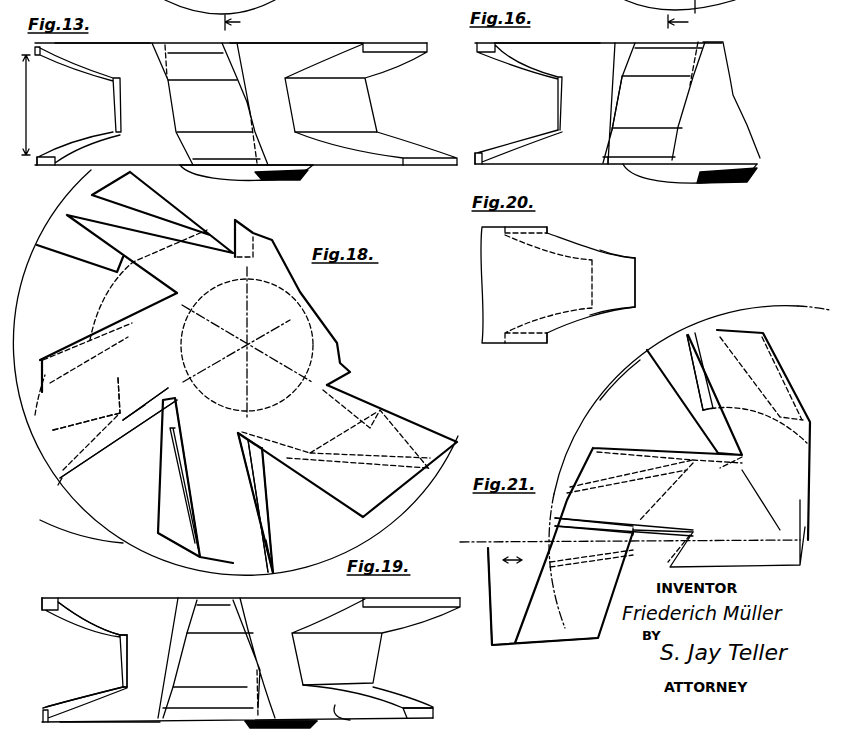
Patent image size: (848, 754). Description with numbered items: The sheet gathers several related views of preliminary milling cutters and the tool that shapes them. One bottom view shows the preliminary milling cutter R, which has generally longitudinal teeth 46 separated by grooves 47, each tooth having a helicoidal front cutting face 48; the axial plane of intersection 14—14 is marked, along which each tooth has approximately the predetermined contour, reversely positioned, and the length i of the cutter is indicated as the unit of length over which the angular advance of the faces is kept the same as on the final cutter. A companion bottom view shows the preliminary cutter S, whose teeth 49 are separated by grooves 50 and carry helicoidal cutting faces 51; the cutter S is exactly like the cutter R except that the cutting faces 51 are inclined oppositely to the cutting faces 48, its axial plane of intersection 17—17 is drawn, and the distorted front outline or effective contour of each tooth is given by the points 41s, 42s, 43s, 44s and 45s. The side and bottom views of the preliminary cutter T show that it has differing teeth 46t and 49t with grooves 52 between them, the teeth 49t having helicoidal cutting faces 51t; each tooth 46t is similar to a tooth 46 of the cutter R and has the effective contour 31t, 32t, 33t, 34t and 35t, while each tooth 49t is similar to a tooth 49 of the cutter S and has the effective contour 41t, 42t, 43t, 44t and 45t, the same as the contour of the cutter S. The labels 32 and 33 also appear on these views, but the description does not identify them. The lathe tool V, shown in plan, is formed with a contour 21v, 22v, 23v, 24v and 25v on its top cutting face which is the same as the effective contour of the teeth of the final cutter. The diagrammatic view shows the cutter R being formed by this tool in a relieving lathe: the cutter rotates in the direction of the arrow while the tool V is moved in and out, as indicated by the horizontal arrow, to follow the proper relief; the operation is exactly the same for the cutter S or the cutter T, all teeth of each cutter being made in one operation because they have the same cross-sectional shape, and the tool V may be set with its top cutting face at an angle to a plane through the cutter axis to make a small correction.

In FIG. 13, the axial plane of intersection 14 is at (246, 22).
In FIG. 16, the axial plane of intersection 17 is at (688, 22).
In FIG. 13, the length of the cutter i is at (26, 105).
In FIG. 13, the preliminary milling cutter R is at (308, 43).
In FIG. 21, the preliminary milling cutter R is at (689, 467).
In FIG. 16, the preliminary milling cutter S is at (723, 40).
In FIG. 18, the preliminary milling cutter T is at (235, 372).
In FIG. 20, the lathe tool V is at (558, 285).
In FIG. 21, the lathe tool V is at (543, 596).
In FIG. 13, the contour point 31t is at (270, 157).
In FIG. 18, the contour point 31t is at (273, 567).
In FIG. 19, the contour point 31t is at (272, 717).
In FIG. 13, the contour point 32t is at (255, 130).
In FIG. 18, the contour point 32t is at (263, 497).
In FIG. 19, the contour point 32t is at (253, 688).
In FIG. 13, the contour point 33t is at (248, 107).
In FIG. 18, the contour point 33t is at (258, 482).
In FIG. 19, the contour point 33t is at (247, 658).
In FIG. 13, the contour point 34t is at (240, 78).
In FIG. 18, the contour point 34t is at (236, 479).
In FIG. 19, the contour point 34t is at (240, 628).
In FIG. 21, the contour point 34t is at (660, 528).
In FIG. 13, the contour point 35t is at (240, 45).
In FIG. 18, the contour point 35t is at (200, 540).
In FIG. 19, the contour point 35t is at (240, 597).
In FIG. 21, the contour point 35t is at (618, 508).
In FIG. 18, the contour point 41t is at (53, 435).
In FIG. 19, the contour point 41t is at (45, 708).
In FIG. 18, the contour point 42t is at (128, 383).
In FIG. 19, the contour point 42t is at (127, 687).
In FIG. 18, the contour point 43t is at (121, 420).
In FIG. 19, the contour point 43t is at (125, 658).
In FIG. 18, the contour point 44t is at (122, 423).
In FIG. 19, the contour point 44t is at (125, 633).
In FIG. 18, the contour point 45t is at (62, 478).
In FIG. 19, the contour point 45t is at (63, 612).
In FIG. 13, the teeth 46 is at (45, 167).
In FIG. 19, the teeth 46 is at (210, 600).
In FIG. 21, the teeth 46 is at (715, 333).
In FIG. 18, the teeth 46t is at (200, 540).
In FIG. 13, the grooves 47 is at (153, 45).
In FIG. 21, the grooves 47 is at (612, 408).
In FIG. 13, the front cutting faces 48 is at (102, 53).
In FIG. 18, the front cutting faces 48 is at (263, 527).
In FIG. 21, the front cutting faces 48 is at (675, 393).
In FIG. 16, the teeth 49 is at (477, 160).
In FIG. 18, the teeth 49t is at (42, 358).
In FIG. 19, the teeth 49t is at (50, 602).
In FIG. 16, the grooves 50 is at (603, 53).
In FIG. 16, the helicoidal cutting faces 51 is at (555, 53).
In FIG. 18, the helicoidal cutting faces 51t is at (100, 442).
In FIG. 18, the grooves 52 is at (123, 495).
In FIG. 16, the contour point 41s is at (687, 153).
In FIG. 16, the contour point 42s is at (687, 127).
In FIG. 16, the contour point 43s is at (693, 100).
In FIG. 16, the contour point 44s is at (703, 75).
In FIG. 16, the contour point 45s is at (707, 55).
In FIG. 20, the contour point 21v is at (548, 233).
In FIG. 20, the contour point 22v is at (635, 258).
In FIG. 20, the contour point 23v is at (636, 280).
In FIG. 20, the contour point 24v is at (635, 307).
In FIG. 21, the contour point 24v is at (637, 523).
In FIG. 20, the contour point 25v is at (548, 335).
In FIG. 21, the contour point 25v is at (550, 543).
In FIG. 19, the face 32 is at (125, 715).
In FIG. 19, the face 33 is at (320, 530).